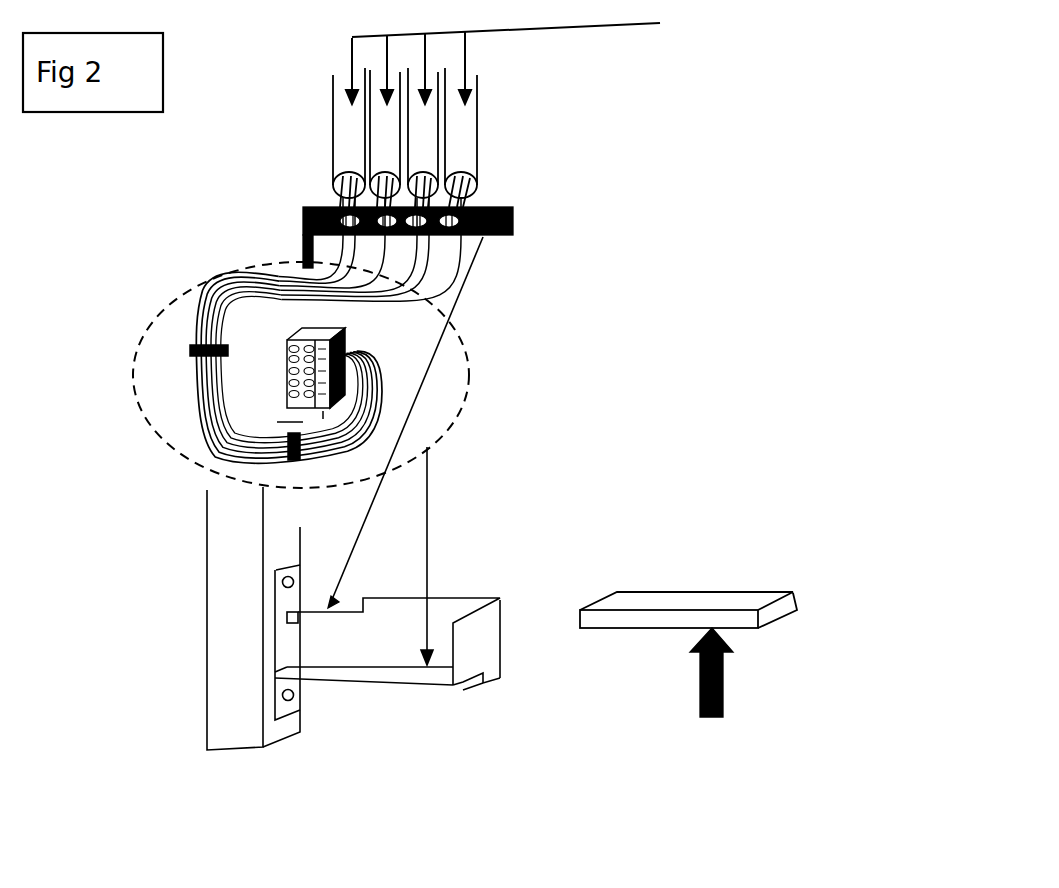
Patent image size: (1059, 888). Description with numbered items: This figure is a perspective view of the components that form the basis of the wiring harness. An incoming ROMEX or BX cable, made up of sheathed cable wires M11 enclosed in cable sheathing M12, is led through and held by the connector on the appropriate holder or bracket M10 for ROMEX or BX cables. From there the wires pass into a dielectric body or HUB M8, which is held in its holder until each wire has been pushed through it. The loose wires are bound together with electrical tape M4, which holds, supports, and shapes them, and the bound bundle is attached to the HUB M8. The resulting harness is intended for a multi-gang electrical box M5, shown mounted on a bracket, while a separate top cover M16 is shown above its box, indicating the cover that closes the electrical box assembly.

The sheathed cable wires M11 is at (542, 53).
The cable sheathing M12 is at (477, 92).
The holder/bracket for ROMEX or BX cables M10 is at (513, 220).
The dielectric body or HUB M8 is at (324, 332).
The electrical tape M4 is at (376, 395).
The multi-gang electrical box M5 is at (383, 685).
The top cover M16 is at (690, 726).